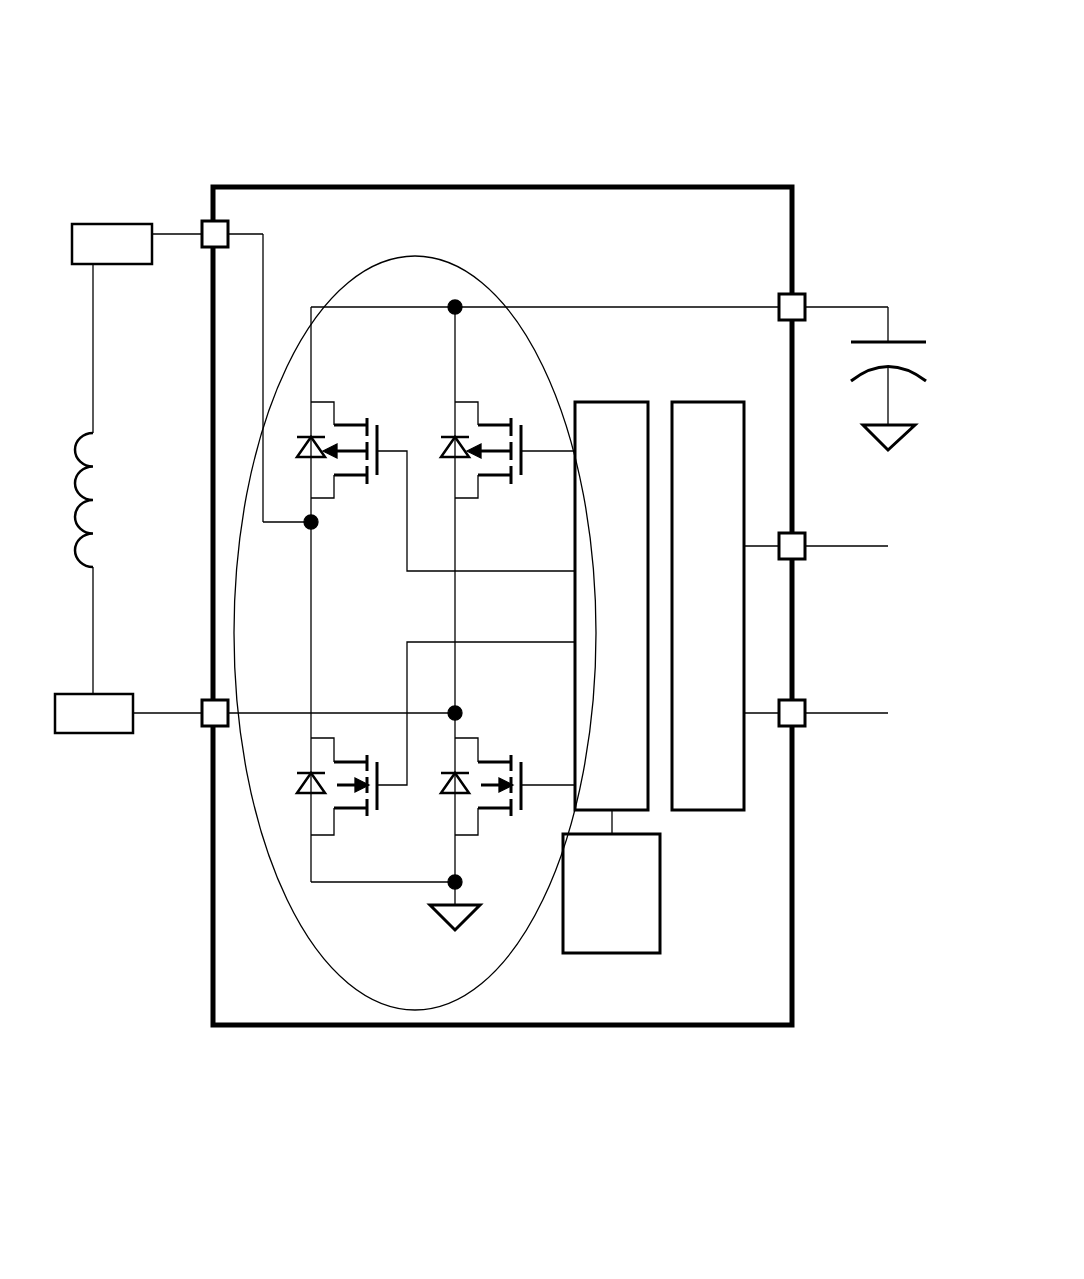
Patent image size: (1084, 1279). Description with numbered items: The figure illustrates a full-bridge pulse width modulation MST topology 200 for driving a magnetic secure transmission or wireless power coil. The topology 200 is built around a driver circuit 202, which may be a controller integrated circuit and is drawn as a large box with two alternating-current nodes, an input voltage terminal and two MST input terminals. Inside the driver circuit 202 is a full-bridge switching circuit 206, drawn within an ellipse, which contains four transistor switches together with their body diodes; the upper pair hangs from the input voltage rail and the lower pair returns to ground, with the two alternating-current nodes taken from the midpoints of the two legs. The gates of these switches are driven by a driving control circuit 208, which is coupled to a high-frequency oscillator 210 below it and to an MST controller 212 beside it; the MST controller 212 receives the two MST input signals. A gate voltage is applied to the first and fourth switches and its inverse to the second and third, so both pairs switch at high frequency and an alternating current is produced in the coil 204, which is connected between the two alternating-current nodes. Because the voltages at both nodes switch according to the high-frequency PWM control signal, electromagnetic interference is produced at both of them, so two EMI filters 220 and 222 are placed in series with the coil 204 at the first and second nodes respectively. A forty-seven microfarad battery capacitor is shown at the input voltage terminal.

The full-bridge pulse width modulation topology 200 is at (467, 125).
The driver circuit 202 is at (478, 245).
The coil 204 is at (83, 440).
The full-bridge switching circuit 206 is at (260, 830).
The driving control circuit 208 is at (637, 785).
The high-frequency oscillator 210 is at (657, 923).
The MST controller 212 is at (707, 420).
The EMI filter 220 is at (107, 222).
The EMI filter 222 is at (73, 733).